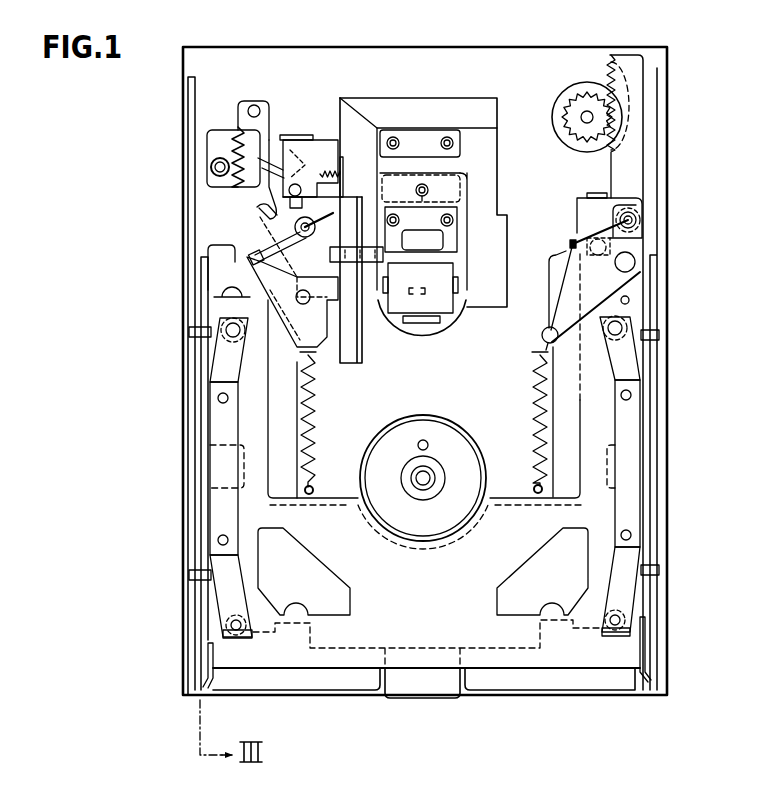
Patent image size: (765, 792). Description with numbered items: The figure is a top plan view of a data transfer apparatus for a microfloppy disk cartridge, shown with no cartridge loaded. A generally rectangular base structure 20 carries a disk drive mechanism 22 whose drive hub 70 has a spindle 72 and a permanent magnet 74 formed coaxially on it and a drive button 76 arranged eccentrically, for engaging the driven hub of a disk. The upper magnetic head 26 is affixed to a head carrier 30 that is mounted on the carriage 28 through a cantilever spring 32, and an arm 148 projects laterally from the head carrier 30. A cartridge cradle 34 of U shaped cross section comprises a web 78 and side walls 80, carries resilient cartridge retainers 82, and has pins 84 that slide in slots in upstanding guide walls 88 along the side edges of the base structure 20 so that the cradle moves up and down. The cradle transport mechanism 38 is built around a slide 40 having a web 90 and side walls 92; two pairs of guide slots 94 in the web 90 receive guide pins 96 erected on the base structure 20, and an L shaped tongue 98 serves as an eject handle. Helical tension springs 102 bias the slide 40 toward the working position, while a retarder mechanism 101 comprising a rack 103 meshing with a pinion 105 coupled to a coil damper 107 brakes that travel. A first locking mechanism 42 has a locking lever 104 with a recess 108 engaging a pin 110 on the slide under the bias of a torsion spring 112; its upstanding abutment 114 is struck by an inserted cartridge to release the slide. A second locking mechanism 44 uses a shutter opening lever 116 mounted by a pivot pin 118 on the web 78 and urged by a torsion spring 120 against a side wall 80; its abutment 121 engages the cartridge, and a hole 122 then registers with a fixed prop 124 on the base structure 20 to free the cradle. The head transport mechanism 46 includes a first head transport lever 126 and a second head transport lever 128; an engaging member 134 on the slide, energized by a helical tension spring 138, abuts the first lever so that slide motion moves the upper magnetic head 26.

The base structure 20 is at (398, 50).
The disk drive mechanism 22 is at (455, 415).
The upper magnetic head 26 is at (425, 292).
The carriage 28 is at (486, 310).
The head carrier 30 is at (460, 232).
The cantilever spring 32 is at (455, 168).
The cartridge cradle 34 is at (274, 672).
The cradle transport mechanism 38 is at (525, 477).
The slide 40 is at (312, 460).
The first locking mechanism 42 is at (238, 280).
The second locking mechanism 44 is at (588, 217).
The head transport mechanism 46 is at (300, 133).
The drive hub 70 is at (420, 438).
The spindle 72 is at (418, 483).
The permanent magnet 74 is at (430, 496).
The drive button 76 is at (418, 443).
The web 78 is at (317, 658).
The side walls 80 is at (215, 670).
The cartridge retainers 82 is at (620, 426).
The pins 84 is at (189, 332).
The guide walls 88 is at (190, 507).
The web 90 is at (276, 432).
The side walls 92 is at (205, 458).
The guide slots 94 is at (230, 297).
The guide pins 96 is at (244, 640).
The L shaped tongue 98 is at (440, 690).
The retarder mechanism 101 is at (558, 95).
The helical tension springs 102 is at (312, 402).
The rack 103 is at (611, 70).
The locking lever 104 is at (262, 282).
The pinion 105 is at (589, 92).
The coil damper 107 is at (552, 122).
The recess 108 is at (303, 305).
The pin 110 is at (297, 293).
The torsion spring 112 is at (262, 228).
The abutment 114 is at (262, 253).
The shutter opening lever 116 is at (565, 308).
The pivot pin 118 is at (637, 220).
The torsion spring 120 is at (642, 238).
The abutment 121 is at (543, 337).
The hole 122 is at (636, 268).
The prop 124 is at (570, 246).
The first head transport lever 126 is at (274, 142).
The second head transport lever 128 is at (350, 195).
The engaging member 134 is at (210, 160).
The helical tension spring 138 is at (224, 128).
The arm 148 is at (368, 310).